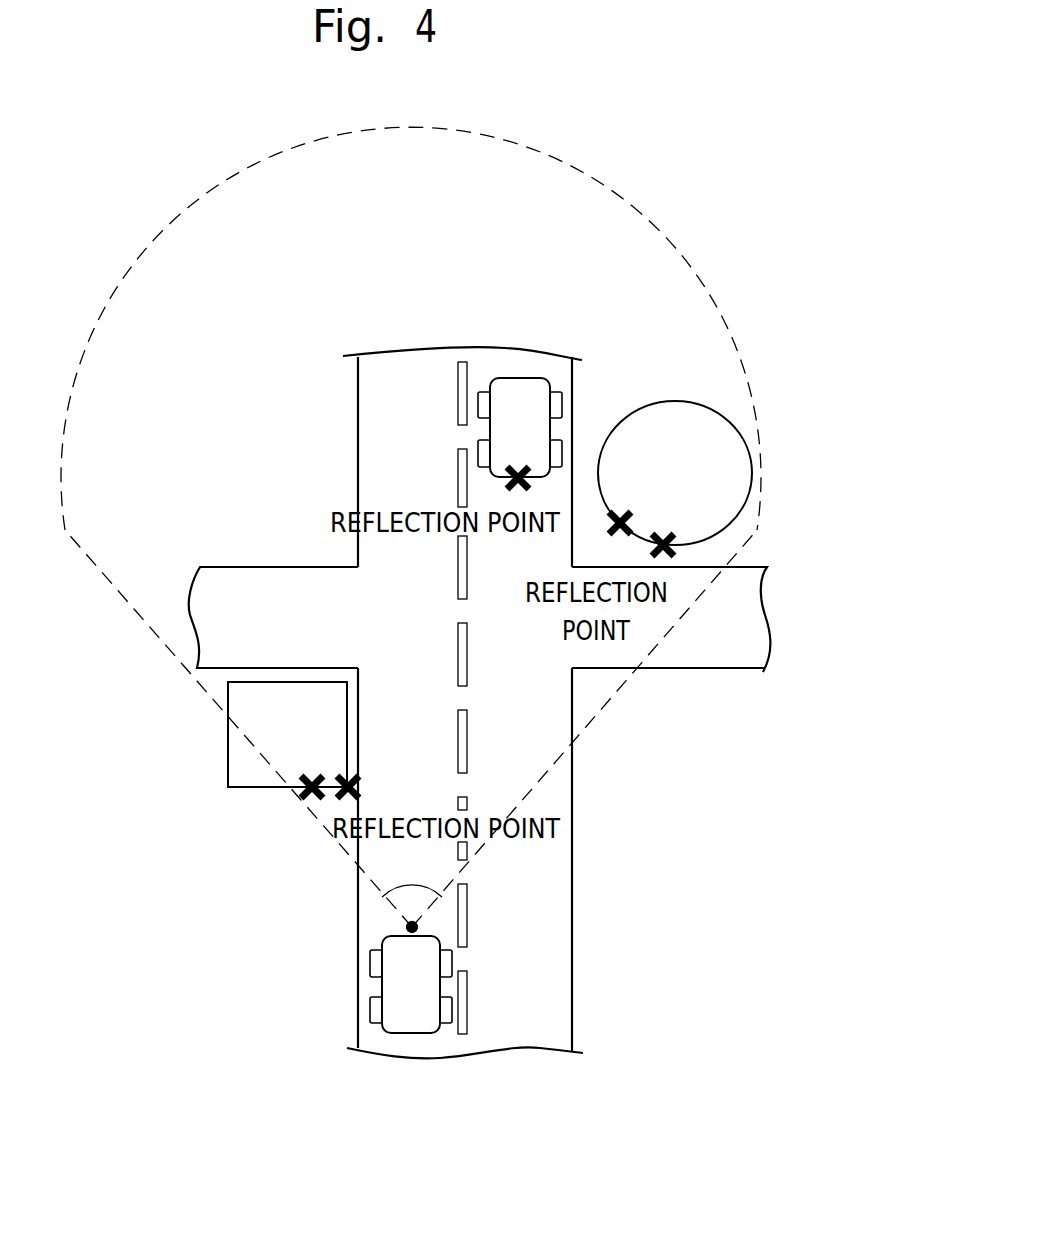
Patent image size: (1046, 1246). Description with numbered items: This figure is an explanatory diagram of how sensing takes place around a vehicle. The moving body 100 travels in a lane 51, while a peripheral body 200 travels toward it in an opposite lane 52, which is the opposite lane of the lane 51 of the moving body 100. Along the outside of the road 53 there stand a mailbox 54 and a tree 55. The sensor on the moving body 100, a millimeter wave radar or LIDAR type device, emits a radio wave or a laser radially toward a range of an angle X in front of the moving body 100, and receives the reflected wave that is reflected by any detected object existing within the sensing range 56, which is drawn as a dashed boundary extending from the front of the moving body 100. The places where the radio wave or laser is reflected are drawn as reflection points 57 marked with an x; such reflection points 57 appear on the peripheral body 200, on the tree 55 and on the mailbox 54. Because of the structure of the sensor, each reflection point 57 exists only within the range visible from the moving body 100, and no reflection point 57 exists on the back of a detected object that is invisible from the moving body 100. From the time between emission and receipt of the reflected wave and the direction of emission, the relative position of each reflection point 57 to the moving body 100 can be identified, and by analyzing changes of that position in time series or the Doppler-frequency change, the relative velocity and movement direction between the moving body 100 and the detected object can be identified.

The lane 51 is at (412, 927).
The opposite lane 52 is at (565, 947).
The road 53 is at (443, 352).
The mailbox 54 is at (240, 788).
The tree 55 is at (742, 438).
The sensing range 56 is at (383, 238).
The reflection point 57 is at (665, 546).
The moving body 100 is at (400, 1030).
The peripheral body 200 is at (547, 390).
The angle X is at (437, 890).